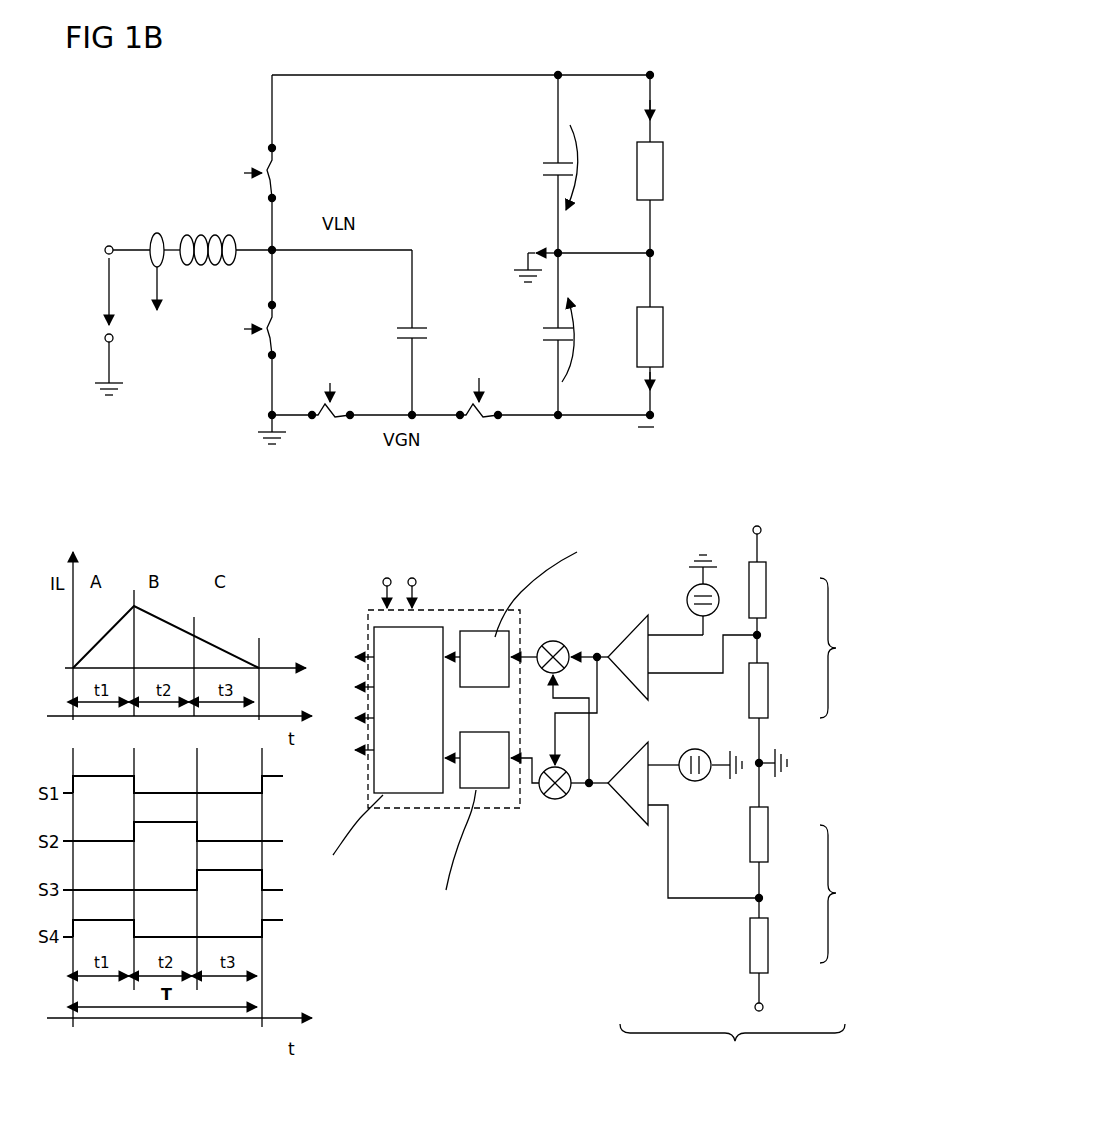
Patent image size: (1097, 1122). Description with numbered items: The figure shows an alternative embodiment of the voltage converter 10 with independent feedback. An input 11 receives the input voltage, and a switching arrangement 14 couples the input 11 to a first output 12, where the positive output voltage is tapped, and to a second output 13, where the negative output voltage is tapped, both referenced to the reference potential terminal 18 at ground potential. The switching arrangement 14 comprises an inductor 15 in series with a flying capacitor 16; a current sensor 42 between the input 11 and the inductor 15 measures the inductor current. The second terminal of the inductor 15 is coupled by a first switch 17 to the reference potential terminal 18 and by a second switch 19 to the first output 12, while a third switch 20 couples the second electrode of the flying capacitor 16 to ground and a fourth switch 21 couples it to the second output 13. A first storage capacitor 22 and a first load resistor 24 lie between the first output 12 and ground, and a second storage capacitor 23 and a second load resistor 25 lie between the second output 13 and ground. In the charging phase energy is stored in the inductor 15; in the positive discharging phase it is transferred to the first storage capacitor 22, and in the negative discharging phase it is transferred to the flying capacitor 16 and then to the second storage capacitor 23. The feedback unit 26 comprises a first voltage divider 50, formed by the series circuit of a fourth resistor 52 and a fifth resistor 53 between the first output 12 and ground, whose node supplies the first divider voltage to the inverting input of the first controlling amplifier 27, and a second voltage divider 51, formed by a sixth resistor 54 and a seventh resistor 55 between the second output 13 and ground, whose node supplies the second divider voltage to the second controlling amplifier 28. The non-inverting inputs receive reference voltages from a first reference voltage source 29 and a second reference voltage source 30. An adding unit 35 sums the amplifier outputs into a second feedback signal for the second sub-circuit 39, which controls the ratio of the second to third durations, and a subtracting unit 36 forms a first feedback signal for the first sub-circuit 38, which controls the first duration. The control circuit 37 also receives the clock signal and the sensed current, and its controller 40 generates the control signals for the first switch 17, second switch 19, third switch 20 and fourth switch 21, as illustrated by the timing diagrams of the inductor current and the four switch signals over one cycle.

The voltage converter 10 is at (160, 131).
The input 11 is at (104, 248).
The first output 12 is at (652, 74).
The second output 13 is at (652, 416).
The switching arrangement 14 is at (236, 122).
The inductor 15 is at (204, 236).
The flying capacitor 16 is at (414, 320).
The first switch 17 is at (263, 340).
The reference potential terminal 18 is at (113, 384).
The second switch 19 is at (273, 175).
The third switch 20 is at (333, 422).
The fourth switch 21 is at (482, 422).
The first storage capacitor 22 is at (544, 164).
The second storage capacitor 23 is at (546, 328).
The first load resistor 24 is at (655, 165).
The second load resistor 25 is at (655, 330).
The feedback unit 26 is at (732, 1047).
The first controlling amplifier 27 is at (626, 636).
The second controlling amplifier 28 is at (640, 822).
The first reference voltage source 29 is at (688, 606).
The second reference voltage source 30 is at (705, 776).
The adding unit 35 is at (554, 642).
The subtracting unit 36 is at (552, 800).
The control circuit 37 is at (445, 808).
The first sub-circuit 38 is at (487, 788).
The second sub-circuit 39 is at (482, 630).
The controller 40 is at (385, 808).
The current sensor 42 is at (151, 236).
The first voltage divider 50 is at (806, 684).
The second voltage divider 51 is at (806, 890).
The fourth resistor 52 is at (766, 592).
The fifth resistor 53 is at (768, 700).
The sixth resistor 54 is at (768, 945).
The seventh resistor 55 is at (768, 838).